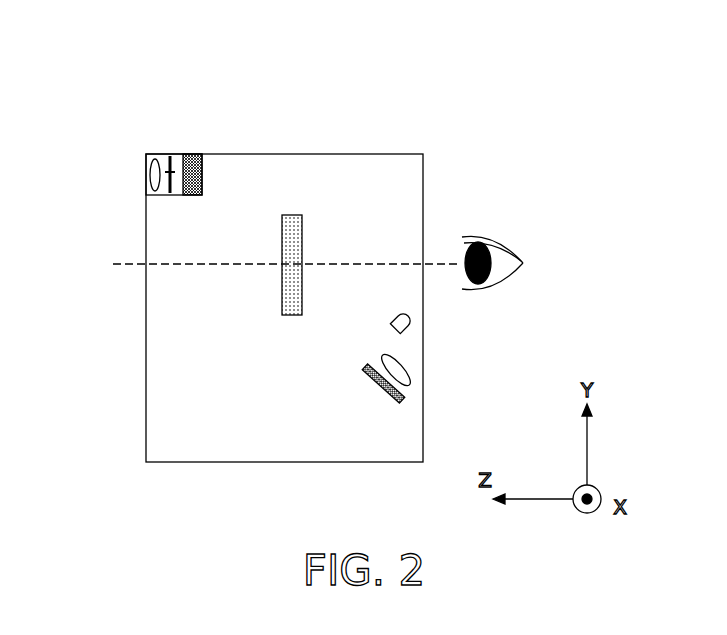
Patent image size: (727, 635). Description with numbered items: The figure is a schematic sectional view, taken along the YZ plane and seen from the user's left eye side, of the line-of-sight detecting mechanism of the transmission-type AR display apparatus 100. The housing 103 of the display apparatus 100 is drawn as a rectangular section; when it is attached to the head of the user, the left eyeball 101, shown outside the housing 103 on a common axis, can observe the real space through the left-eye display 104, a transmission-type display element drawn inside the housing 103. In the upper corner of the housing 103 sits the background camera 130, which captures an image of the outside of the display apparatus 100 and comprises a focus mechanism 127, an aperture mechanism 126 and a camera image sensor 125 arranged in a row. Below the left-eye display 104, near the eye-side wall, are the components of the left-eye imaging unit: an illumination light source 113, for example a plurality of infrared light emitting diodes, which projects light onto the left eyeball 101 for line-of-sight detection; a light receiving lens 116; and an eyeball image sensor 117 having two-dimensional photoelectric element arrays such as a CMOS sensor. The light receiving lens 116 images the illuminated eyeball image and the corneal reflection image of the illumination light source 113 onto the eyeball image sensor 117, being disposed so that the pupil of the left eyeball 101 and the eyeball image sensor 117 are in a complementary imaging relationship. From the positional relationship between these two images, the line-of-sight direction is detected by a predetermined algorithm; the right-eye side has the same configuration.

The display apparatus 100 is at (132, 228).
The left eyeball 101 is at (503, 235).
The housing 103 is at (146, 454).
The left-eye display 104 is at (292, 215).
The illumination light source 113 is at (407, 332).
The light receiving lens 116 is at (413, 378).
The eyeball image sensor 117 is at (400, 400).
The camera image sensor 125 is at (200, 155).
The aperture mechanism 126 is at (171, 155).
The focus mechanism 127 is at (153, 156).
The background camera 130 is at (107, 84).